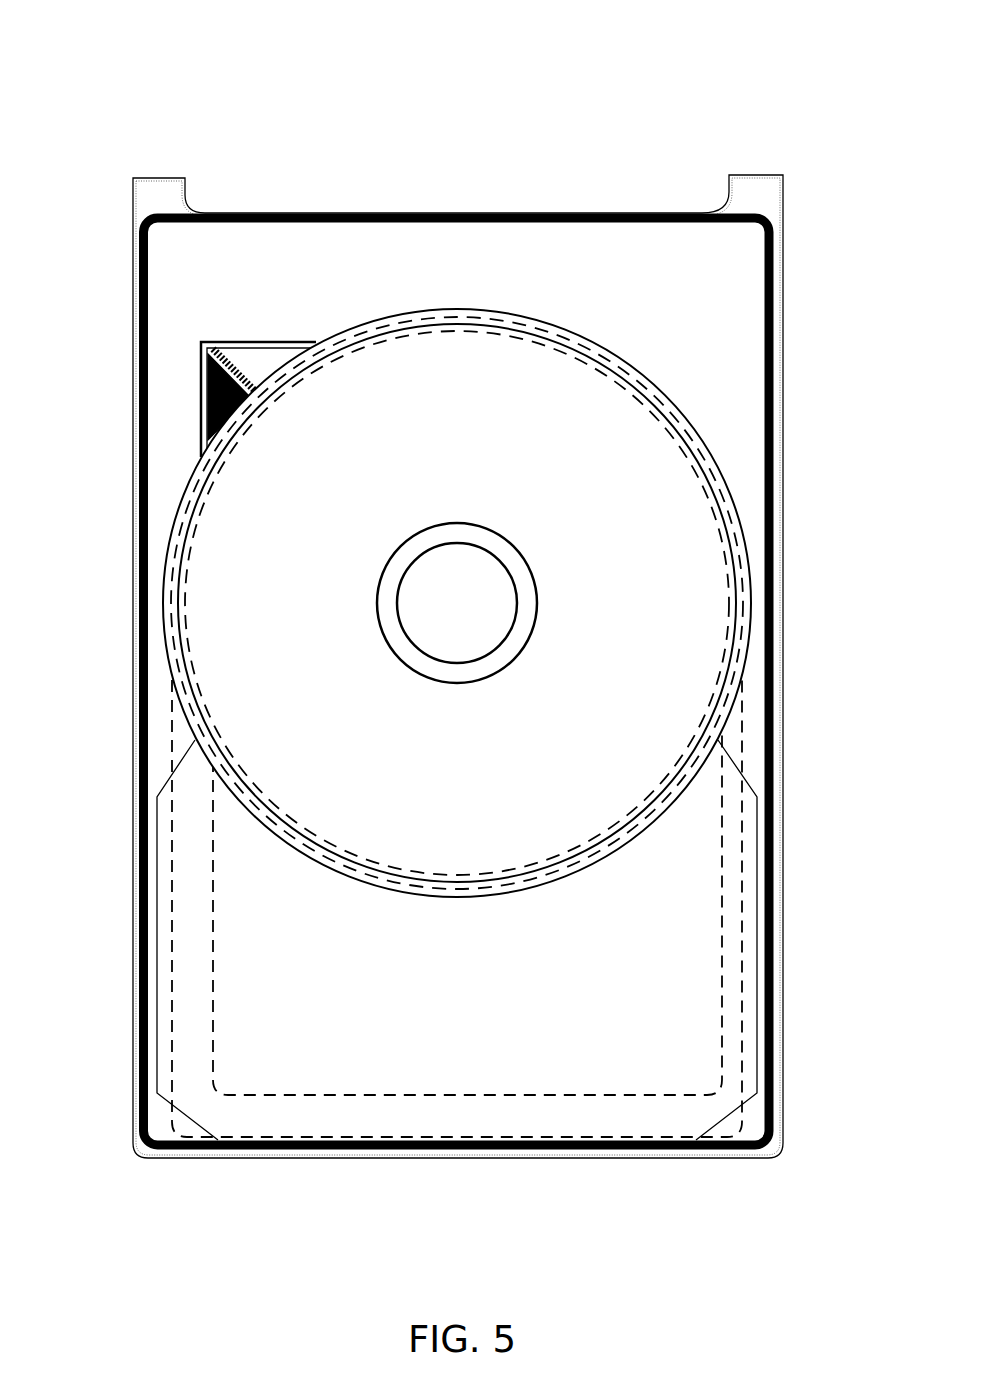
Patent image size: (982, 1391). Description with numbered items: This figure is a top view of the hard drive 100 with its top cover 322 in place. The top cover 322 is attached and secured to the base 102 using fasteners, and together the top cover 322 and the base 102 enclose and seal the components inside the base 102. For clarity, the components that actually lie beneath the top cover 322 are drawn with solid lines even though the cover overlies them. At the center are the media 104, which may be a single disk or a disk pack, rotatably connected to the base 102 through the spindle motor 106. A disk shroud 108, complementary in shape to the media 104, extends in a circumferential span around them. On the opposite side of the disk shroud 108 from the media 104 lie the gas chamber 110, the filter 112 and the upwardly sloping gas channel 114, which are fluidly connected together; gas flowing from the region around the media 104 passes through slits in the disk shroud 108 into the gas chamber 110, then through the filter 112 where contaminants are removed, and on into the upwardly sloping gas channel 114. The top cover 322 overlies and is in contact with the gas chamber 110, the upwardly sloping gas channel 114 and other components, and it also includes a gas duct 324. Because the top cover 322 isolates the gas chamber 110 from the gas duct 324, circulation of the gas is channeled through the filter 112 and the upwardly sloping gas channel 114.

The hard drive 100 is at (464, 582).
The base 102 is at (158, 672).
The media 104 is at (460, 526).
The spindle motor 106 is at (430, 612).
The disk shroud 108 is at (485, 310).
The gas chamber 110 is at (253, 294).
The filter 112 is at (238, 360).
The upwardly sloping gas channel 114 is at (205, 400).
The top cover 322 is at (742, 215).
The gas duct 324 is at (735, 880).